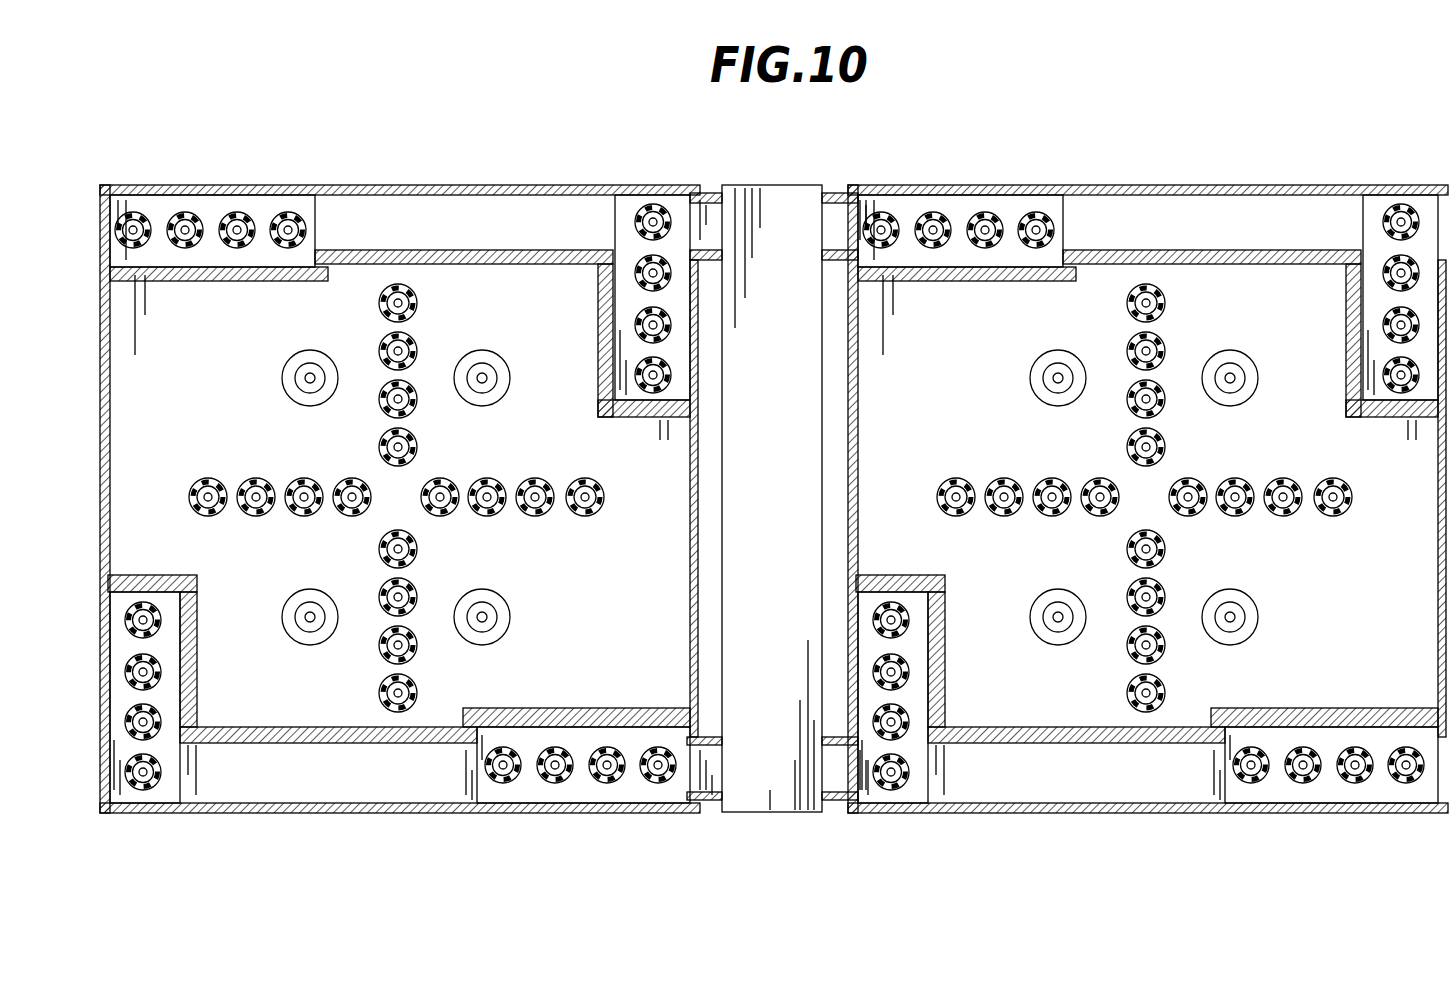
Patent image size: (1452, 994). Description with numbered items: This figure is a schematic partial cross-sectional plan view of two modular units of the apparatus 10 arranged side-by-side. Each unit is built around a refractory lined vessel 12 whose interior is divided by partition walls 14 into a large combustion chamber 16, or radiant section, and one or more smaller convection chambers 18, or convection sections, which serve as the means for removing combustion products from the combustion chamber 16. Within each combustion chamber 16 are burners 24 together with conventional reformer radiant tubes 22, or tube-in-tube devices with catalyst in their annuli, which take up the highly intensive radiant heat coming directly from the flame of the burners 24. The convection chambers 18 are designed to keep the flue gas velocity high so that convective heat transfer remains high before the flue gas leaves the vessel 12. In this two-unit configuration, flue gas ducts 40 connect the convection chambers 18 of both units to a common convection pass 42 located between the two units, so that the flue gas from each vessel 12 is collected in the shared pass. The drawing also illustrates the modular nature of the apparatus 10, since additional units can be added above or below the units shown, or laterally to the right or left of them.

The apparatus 10 is at (1045, 150).
The refractory lined vessel 12 is at (1148, 835).
The partition walls 14 is at (1324, 783).
The combustion chamber 16 is at (1144, 568).
The convection chambers 18 is at (1406, 578).
The reformer radiant tubes 22 is at (1328, 801).
The burners 24 is at (1144, 528).
The flue gas ducts 40 is at (450, 222).
The common convection pass 42 is at (763, 775).